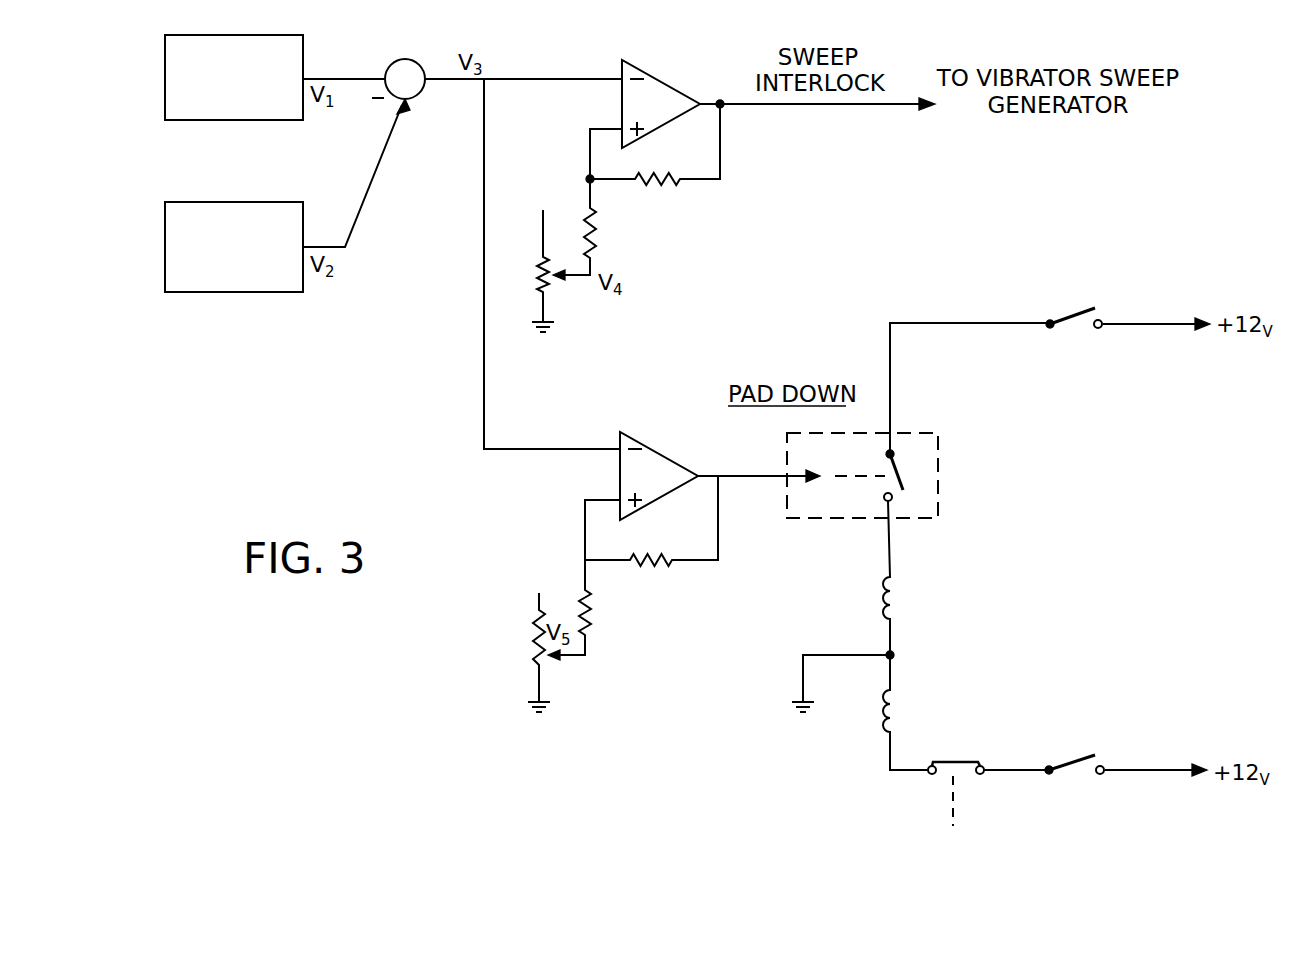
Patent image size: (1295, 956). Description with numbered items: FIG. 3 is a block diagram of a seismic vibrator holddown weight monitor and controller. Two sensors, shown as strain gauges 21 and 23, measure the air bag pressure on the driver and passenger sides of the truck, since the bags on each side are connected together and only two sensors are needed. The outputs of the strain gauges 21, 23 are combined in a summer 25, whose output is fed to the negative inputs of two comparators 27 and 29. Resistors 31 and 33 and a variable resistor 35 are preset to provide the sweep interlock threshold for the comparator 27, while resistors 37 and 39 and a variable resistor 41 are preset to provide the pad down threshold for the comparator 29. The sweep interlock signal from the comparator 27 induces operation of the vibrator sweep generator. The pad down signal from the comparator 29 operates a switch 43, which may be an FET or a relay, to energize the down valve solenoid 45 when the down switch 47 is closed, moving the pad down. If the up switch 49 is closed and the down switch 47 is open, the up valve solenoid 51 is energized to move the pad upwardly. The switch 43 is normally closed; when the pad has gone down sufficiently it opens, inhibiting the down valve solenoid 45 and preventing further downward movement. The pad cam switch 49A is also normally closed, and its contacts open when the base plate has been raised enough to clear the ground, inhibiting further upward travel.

The strain gauge 21 is at (218, 90).
The strain gauge 23 is at (218, 260).
The summer 25 is at (418, 95).
The comparator 27 is at (672, 82).
The comparator 29 is at (668, 446).
The resistor 31 is at (665, 183).
The resistor 33 is at (597, 229).
The variable resistor 35 is at (549, 291).
The resistor 37 is at (655, 565).
The resistor 39 is at (592, 622).
The variable resistor 41 is at (533, 650).
The switch 43 is at (938, 470).
The down valve solenoid 45 is at (898, 590).
The down switch 47 is at (1066, 306).
The up switch 49 is at (1068, 758).
The pad cam switch 49A is at (930, 775).
The up valve solenoid 51 is at (898, 700).